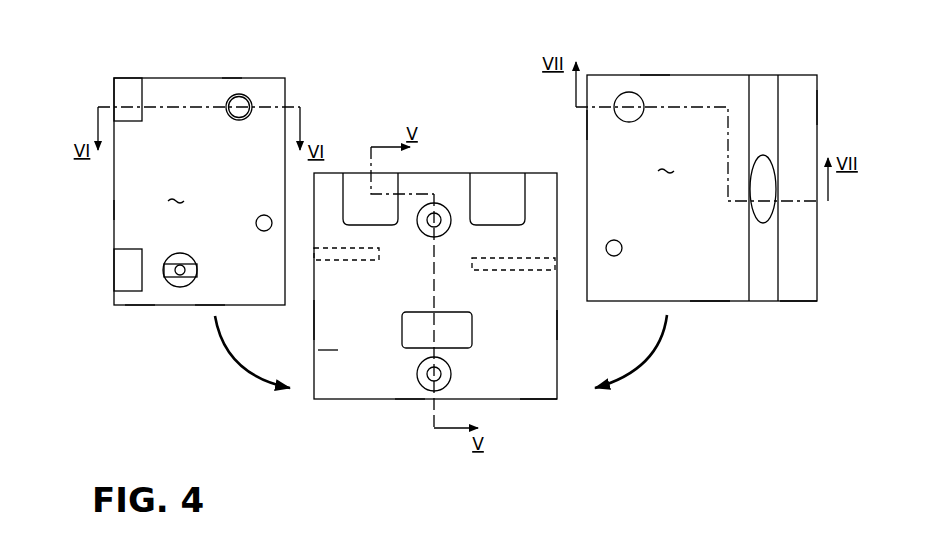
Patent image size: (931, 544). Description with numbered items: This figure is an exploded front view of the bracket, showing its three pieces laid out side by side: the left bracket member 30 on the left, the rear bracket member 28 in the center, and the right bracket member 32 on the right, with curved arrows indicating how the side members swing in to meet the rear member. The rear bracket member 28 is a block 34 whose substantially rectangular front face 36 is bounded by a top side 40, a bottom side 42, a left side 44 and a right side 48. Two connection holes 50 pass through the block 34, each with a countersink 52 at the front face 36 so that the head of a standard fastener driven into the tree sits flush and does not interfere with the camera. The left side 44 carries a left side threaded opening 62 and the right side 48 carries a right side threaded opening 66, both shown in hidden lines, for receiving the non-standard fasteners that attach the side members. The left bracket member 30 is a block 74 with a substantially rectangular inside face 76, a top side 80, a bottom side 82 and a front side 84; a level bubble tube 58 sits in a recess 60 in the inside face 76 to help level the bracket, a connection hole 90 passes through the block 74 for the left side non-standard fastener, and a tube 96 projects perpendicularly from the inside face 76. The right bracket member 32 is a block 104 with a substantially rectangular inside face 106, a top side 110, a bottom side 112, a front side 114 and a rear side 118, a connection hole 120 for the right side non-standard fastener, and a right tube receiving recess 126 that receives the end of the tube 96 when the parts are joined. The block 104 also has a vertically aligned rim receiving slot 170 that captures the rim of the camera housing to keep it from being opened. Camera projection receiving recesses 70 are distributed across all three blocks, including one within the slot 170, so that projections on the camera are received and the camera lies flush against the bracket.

The rear bracket member 28 is at (437, 170).
The left bracket member 30 is at (177, 76).
The right bracket member 32 is at (703, 74).
The block 34 is at (530, 402).
The front face 36 is at (338, 350).
The top side 40 is at (547, 172).
The bottom side 42 is at (407, 402).
The left side 44 is at (316, 322).
The right side 48 is at (557, 330).
The connection hole 50 is at (440, 218).
The countersink 52 is at (420, 232).
The level bubble tube 58 is at (185, 285).
The recess 60 is at (165, 281).
The left side threaded opening 62 is at (346, 260).
The right side threaded opening 66 is at (522, 271).
The camera projection receiving recess 70 is at (122, 87).
The block 74 is at (208, 307).
The inside face 76 is at (176, 191).
The top side 80 is at (232, 78).
The bottom side 82 is at (140, 306).
The front side 84 is at (114, 210).
The connection hole 90 is at (260, 231).
The tube 96 is at (245, 97).
The block 104 is at (798, 303).
The inside face 106 is at (668, 161).
The top side 110 is at (655, 75).
The bottom side 112 is at (710, 302).
The front side 114 is at (817, 107).
The rear side 118 is at (584, 124).
The connection hole 120 is at (620, 241).
The right tube receiving recess 126 is at (625, 93).
The vertically aligned rim receiving slot 170 is at (765, 100).